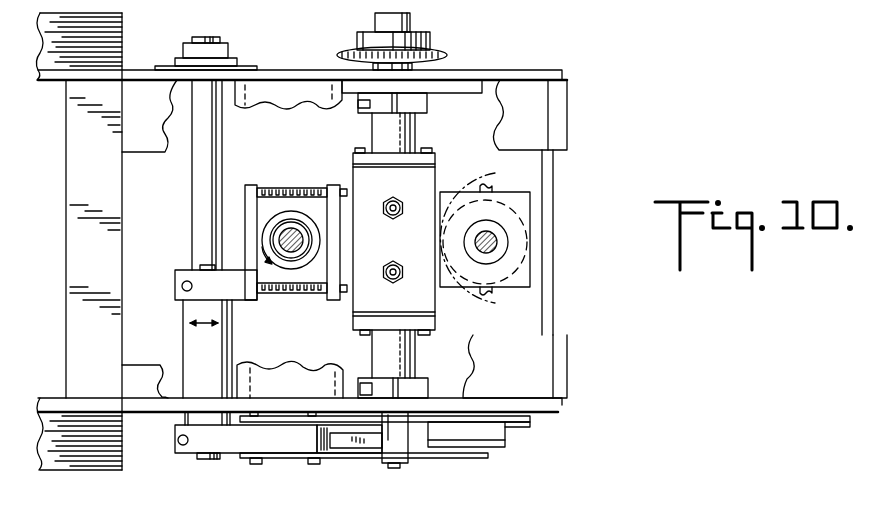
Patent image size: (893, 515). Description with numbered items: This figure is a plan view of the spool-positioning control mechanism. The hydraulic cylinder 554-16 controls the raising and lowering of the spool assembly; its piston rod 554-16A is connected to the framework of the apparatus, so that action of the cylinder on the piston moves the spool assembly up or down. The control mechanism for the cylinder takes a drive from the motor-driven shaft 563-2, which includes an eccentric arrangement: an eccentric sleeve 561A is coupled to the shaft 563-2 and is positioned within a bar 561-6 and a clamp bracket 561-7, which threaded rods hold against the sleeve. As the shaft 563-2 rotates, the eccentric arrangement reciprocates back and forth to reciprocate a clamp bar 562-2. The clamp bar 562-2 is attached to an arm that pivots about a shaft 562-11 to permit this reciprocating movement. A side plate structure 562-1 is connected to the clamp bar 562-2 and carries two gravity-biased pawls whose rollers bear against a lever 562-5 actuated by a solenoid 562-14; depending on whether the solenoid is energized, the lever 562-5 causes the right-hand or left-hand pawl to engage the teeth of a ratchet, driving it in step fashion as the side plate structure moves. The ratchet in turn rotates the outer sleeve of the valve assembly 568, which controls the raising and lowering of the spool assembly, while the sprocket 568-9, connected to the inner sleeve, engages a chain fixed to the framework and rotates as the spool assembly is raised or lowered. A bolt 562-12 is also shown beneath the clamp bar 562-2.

The eccentric sleeve 561A is at (292, 197).
The sprocket 568-9 is at (425, 45).
The clamp bracket 561-7 is at (250, 184).
The bar 561-6 is at (330, 184).
The shaft 562-11 is at (198, 192).
The shaft 563-2 is at (302, 238).
The hydraulic cylinder 554-16 is at (523, 202).
The piston rod 554-16A is at (497, 243).
The valve assembly 568 is at (450, 317).
The solenoid 562-14 is at (505, 438).
The clamp bar 562-2 is at (193, 445).
The nut 562-12 is at (205, 459).
The side plate structure 562-1 is at (333, 455).
The lever 562-5 is at (413, 442).